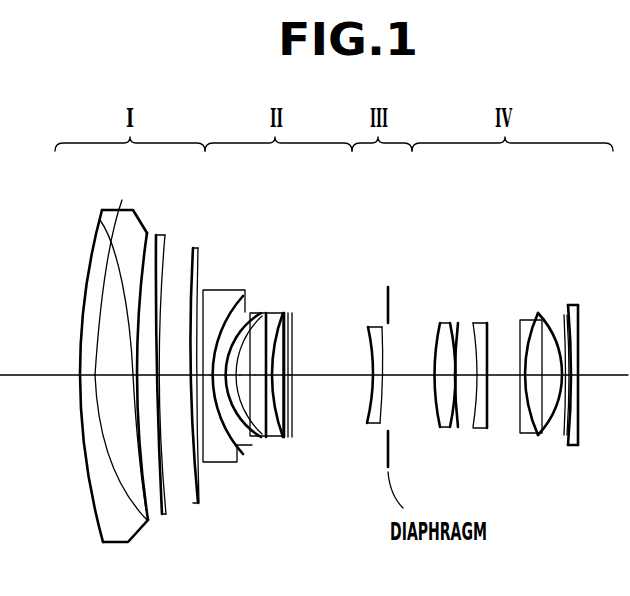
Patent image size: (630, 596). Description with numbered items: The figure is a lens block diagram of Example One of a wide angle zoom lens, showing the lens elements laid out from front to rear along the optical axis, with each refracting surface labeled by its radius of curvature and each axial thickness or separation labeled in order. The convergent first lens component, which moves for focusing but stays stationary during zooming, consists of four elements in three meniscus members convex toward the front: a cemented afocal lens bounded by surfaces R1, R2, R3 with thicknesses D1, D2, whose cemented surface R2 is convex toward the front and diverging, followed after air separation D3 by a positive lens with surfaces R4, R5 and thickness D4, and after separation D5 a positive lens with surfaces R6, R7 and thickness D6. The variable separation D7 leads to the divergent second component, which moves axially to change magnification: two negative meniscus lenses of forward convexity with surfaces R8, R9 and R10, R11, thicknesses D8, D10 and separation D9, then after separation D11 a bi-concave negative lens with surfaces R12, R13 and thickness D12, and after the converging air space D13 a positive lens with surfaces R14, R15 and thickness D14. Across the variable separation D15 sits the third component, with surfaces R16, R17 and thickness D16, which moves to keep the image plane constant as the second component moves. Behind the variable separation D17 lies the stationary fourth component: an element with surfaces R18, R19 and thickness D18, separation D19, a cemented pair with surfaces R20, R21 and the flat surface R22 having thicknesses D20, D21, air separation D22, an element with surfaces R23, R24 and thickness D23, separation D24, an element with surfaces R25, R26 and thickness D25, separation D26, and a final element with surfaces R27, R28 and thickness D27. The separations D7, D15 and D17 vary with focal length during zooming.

The radius of curvature R1 is at (92, 265).
The radius of curvature R2 is at (100, 220).
The radius of curvature R3 is at (122, 200).
The radius of curvature R4 is at (147, 232).
The radius of curvature R5 is at (157, 234).
The radius of curvature R6 is at (166, 234).
The radius of curvature R7 is at (193, 247).
The radius of curvature R8 is at (206, 292).
The radius of curvature R9 is at (228, 305).
The radius of curvature R10 is at (240, 313).
The radius of curvature R11 is at (250, 313).
The radius of curvature R12 is at (262, 313).
The radius of curvature R13 is at (272, 313).
The radius of curvature R14 is at (283, 313).
The radius of curvature R15 is at (292, 313).
The radius of curvature R16 is at (366, 326).
The radius of curvature R17 is at (383, 326).
The radius of curvature R18 is at (440, 322).
The radius of curvature R19 is at (450, 322).
The radius of curvature R20 is at (458, 322).
The radius of curvature R21 is at (474, 322).
The radius of curvature R22 is at (487, 322).
The radius of curvature R23 is at (522, 318).
The radius of curvature R24 is at (538, 312).
The radius of curvature R25 is at (563, 314).
The radius of curvature R26 is at (567, 314).
The radius of curvature R27 is at (569, 304).
The radius of curvature R28 is at (578, 304).
The axial thickness D1 is at (83, 378).
The axial thickness D2 is at (115, 377).
The axial separation D3 is at (143, 522).
The axial thickness D4 is at (155, 516).
The axial separation D5 is at (165, 516).
The axial thickness D6 is at (166, 376).
The axial separation D7 is at (203, 468).
The axial thickness D8 is at (222, 456).
The axial separation D9 is at (237, 456).
The axial thickness D10 is at (248, 437).
The axial separation D11 is at (258, 437).
The axial thickness D12 is at (266, 437).
The axial separation D13 is at (276, 437).
The axial thickness D14 is at (286, 437).
The axial separation D15 is at (323, 377).
The axial thickness D16 is at (374, 424).
The axial separation D17 is at (413, 377).
The axial thickness D18 is at (443, 430).
The axial separation D19 is at (454, 430).
The axial thickness D20 is at (470, 430).
The axial thickness D21 is at (484, 430).
The axial separation D22 is at (502, 377).
The axial thickness D23 is at (532, 440).
The axial separation D24 is at (540, 440).
The axial thickness D25 is at (560, 440).
The axial separation D26 is at (570, 447).
The axial thickness D27 is at (580, 447).